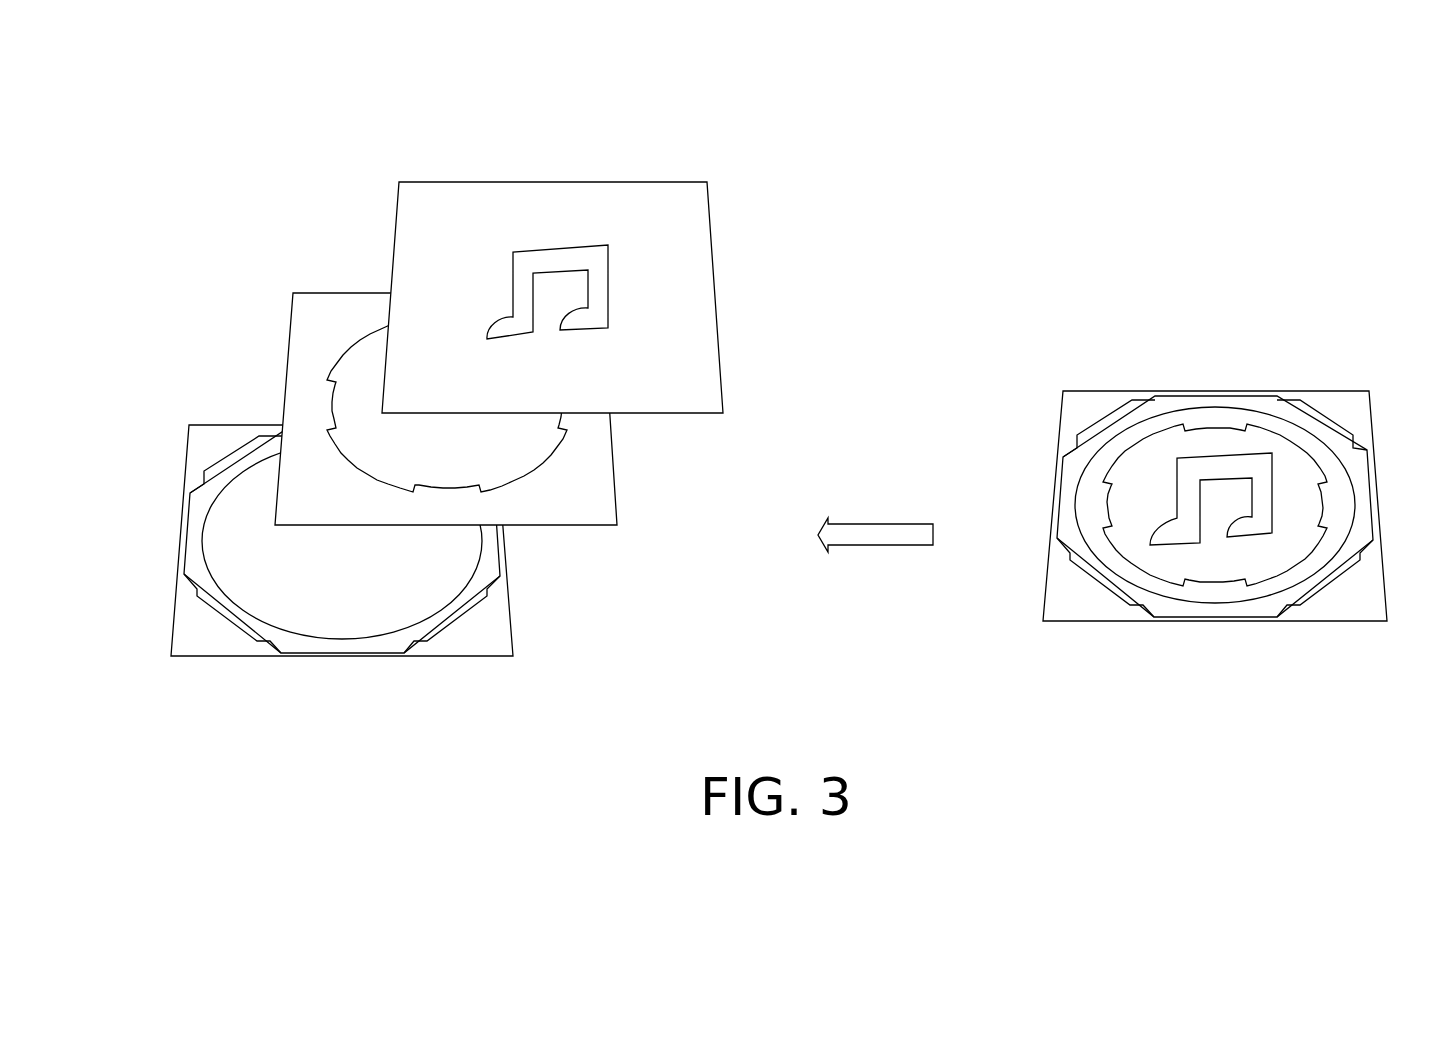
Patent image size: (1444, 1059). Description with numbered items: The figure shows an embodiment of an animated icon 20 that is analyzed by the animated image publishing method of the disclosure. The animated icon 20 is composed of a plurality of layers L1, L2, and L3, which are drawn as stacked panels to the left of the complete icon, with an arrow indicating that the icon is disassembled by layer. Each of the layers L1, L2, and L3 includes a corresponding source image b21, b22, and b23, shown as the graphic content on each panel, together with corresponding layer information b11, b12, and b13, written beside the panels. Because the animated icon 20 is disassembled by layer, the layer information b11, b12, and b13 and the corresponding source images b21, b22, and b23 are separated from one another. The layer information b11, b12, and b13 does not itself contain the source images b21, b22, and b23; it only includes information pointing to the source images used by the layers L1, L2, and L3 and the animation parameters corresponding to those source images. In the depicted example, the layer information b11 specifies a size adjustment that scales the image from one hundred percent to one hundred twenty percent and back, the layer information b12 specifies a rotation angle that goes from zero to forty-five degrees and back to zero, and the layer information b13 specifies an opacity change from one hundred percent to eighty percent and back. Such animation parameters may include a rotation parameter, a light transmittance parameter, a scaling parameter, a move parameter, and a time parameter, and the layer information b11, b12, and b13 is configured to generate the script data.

The layer L1 is at (495, 261).
The layer L2 is at (440, 424).
The layer L3 is at (294, 569).
The source image b21 is at (550, 182).
The source image b22 is at (617, 515).
The source image b23 is at (482, 654).
The layer information b11 is at (869, 265).
The layer information b12 is at (783, 465).
The layer information b13 is at (664, 604).
The animated icon 20 is at (1392, 370).